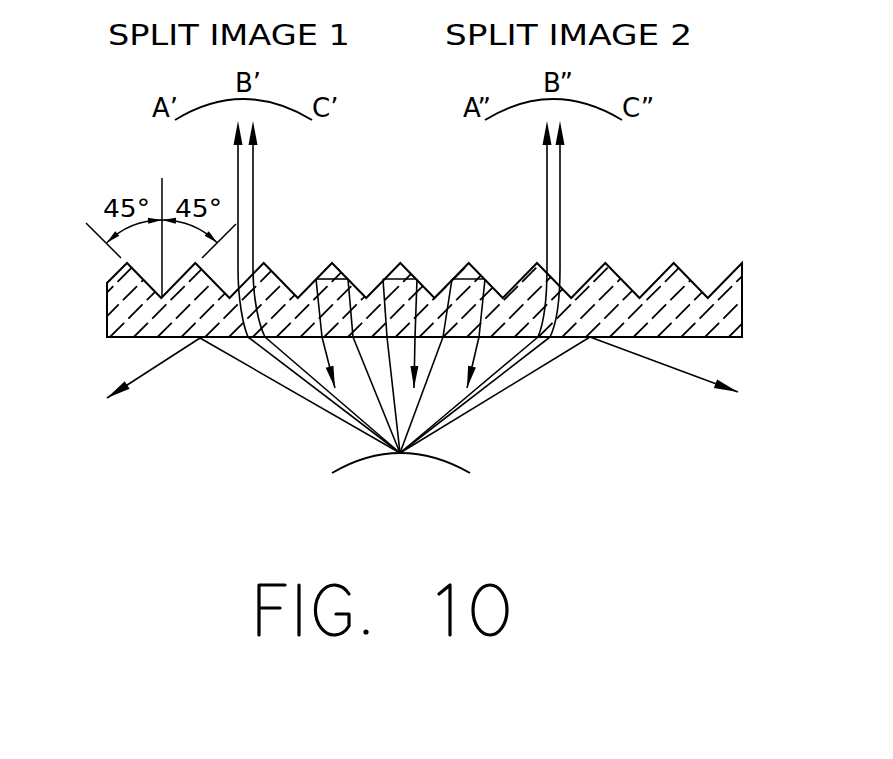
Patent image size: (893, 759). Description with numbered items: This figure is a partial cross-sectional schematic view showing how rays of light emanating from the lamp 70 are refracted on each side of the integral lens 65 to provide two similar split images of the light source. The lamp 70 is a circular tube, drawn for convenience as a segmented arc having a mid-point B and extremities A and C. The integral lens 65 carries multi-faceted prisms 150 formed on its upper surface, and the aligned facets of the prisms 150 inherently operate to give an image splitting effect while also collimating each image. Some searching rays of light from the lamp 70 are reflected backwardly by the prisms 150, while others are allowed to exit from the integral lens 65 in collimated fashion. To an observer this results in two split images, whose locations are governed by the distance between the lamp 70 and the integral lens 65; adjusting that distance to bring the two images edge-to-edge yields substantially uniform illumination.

The integral lens 65 is at (107, 293).
The prisms 150 is at (612, 268).
The lamp 70 is at (452, 465).